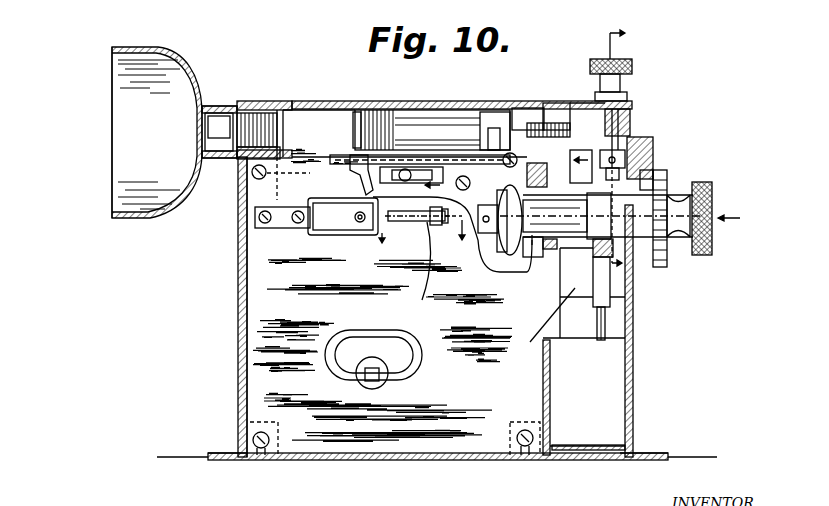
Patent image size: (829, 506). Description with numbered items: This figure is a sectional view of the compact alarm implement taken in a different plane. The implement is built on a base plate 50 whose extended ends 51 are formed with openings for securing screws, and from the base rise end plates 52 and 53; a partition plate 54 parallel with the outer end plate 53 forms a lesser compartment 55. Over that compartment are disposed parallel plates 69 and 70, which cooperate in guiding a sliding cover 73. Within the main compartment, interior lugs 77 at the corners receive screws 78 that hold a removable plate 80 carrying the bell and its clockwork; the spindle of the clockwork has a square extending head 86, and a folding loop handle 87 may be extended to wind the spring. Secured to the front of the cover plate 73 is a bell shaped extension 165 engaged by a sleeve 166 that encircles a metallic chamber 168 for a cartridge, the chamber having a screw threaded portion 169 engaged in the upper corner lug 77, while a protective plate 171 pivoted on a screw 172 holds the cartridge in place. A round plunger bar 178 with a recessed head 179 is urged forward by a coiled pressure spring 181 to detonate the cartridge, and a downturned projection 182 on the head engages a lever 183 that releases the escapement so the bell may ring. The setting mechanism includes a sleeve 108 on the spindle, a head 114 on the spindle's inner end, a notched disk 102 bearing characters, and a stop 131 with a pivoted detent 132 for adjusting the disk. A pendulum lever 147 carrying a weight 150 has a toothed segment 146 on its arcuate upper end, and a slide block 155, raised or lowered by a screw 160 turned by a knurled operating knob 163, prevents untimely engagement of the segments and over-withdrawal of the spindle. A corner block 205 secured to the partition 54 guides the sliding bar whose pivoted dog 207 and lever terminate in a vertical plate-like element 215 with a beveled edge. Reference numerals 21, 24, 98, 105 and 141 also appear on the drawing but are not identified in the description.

The bell shaped extension 165 is at (170, 54).
The sleeve 166 is at (215, 110).
The metallic chamber 168 is at (207, 138).
The screw threaded portion 169 is at (248, 113).
The protective plate 171 is at (293, 107).
The screw 172 is at (287, 126).
The end plate 52 is at (243, 308).
The removable plate 80 is at (267, 263).
The end plate 53 is at (633, 318).
The base plate 50 is at (435, 455).
The ends of base plate 51 is at (223, 458).
The partition plate 54 is at (657, 452).
The weight 150 is at (590, 392).
The mounting screw 98 is at (262, 458).
The interior lugs 77 is at (281, 458).
The screws 78 is at (252, 180).
The folding loop handle 87 is at (418, 368).
The square extending head 86 is at (373, 382).
The round plunger bar 178 is at (437, 120).
The recessed head 179 is at (360, 112).
The coiled pressure spring 181 is at (390, 110).
The sliding cover 73 is at (500, 108).
The parallel plate 69 is at (533, 115).
The corner block 205 is at (590, 98).
The knurled operating knob 163 is at (633, 66).
The direction of movement 24 is at (613, 149).
The parallel plate 70 is at (617, 107).
The vertical plate-like element 215 is at (630, 137).
The bearing block 105 is at (658, 130).
The slide block 155 is at (617, 173).
The screw 160 is at (643, 223).
The notched disk 102 is at (667, 175).
The dial 141 is at (575, 250).
The segment 146 is at (610, 296).
The compartment 55 is at (592, 293).
The pendulum lever 147 is at (600, 325).
The sleeve 108 is at (542, 325).
The downturned projection 182 is at (343, 163).
The lever 183 is at (316, 207).
The stop 131 is at (445, 220).
The pivoted detent 132 is at (424, 271).
The direction of movement 21 is at (416, 237).
The dog 207 is at (478, 245).
The head 114 is at (524, 274).